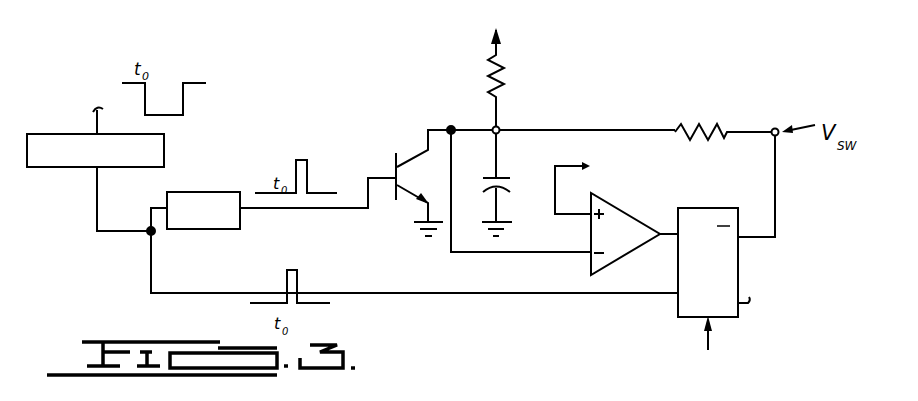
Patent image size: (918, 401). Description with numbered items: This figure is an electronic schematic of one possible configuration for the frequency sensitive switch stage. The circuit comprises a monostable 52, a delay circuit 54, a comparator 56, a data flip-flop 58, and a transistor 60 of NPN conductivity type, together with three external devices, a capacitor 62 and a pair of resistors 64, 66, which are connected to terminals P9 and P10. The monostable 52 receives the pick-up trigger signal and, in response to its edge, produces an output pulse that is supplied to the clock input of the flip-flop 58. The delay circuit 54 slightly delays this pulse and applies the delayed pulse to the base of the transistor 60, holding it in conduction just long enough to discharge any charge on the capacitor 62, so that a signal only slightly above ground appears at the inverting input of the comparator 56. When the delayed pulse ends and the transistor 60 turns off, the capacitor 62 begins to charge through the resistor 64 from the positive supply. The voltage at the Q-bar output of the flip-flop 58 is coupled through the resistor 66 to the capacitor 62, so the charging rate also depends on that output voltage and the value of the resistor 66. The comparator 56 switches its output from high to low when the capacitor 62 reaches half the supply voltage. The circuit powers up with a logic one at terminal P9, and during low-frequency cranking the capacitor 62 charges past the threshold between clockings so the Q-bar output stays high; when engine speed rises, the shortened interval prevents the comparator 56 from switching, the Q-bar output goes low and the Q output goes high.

The monostable 52 is at (46, 167).
The delay circuit 54 is at (201, 192).
The comparator 56 is at (630, 216).
The data flip-flop 58 is at (740, 279).
The transistor 60 is at (391, 165).
The capacitor 62 is at (513, 183).
The resistor 64 is at (505, 78).
The resistor 66 is at (700, 123).
The terminal P10 is at (499, 127).
The terminal P9 is at (777, 124).